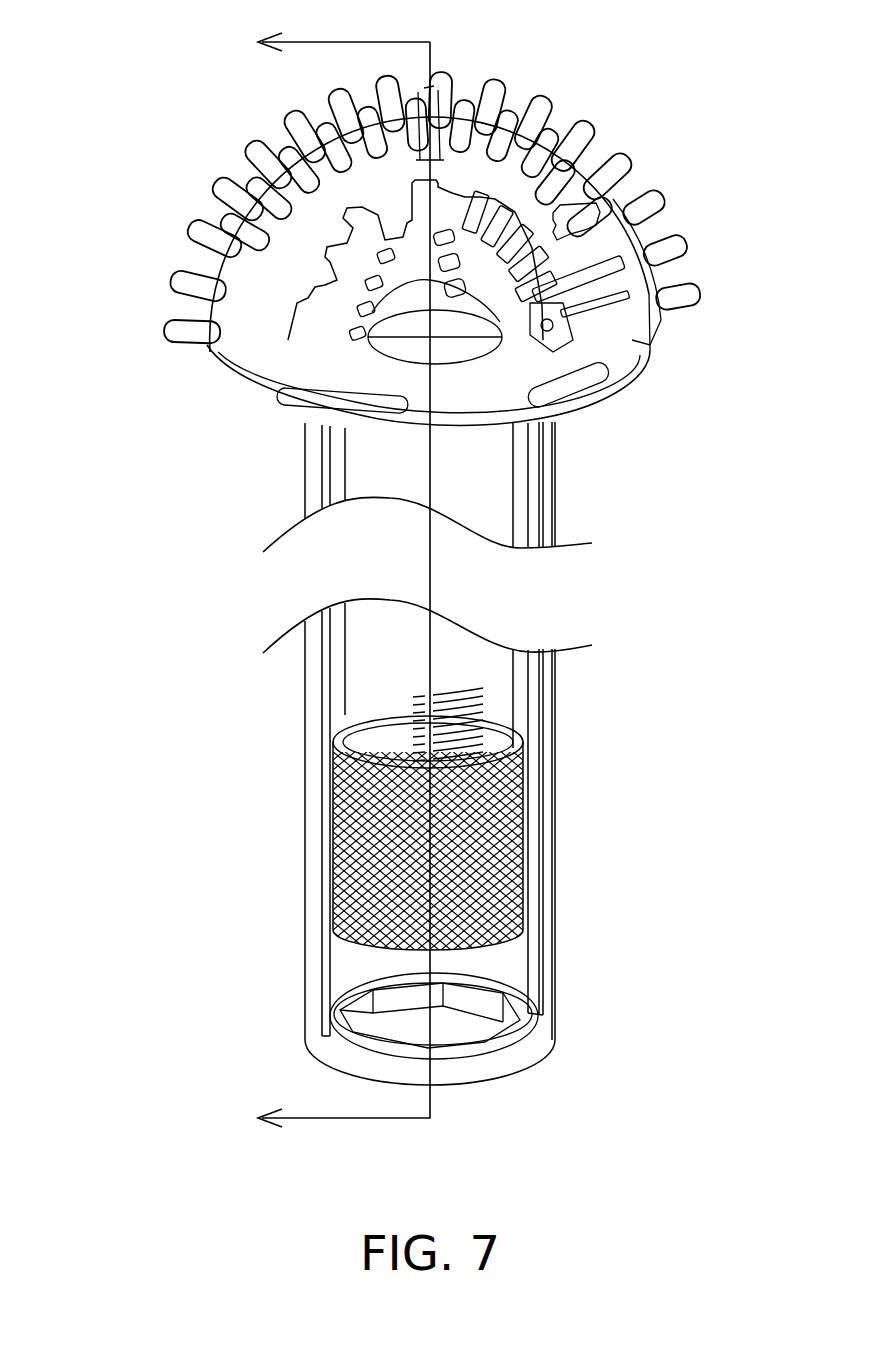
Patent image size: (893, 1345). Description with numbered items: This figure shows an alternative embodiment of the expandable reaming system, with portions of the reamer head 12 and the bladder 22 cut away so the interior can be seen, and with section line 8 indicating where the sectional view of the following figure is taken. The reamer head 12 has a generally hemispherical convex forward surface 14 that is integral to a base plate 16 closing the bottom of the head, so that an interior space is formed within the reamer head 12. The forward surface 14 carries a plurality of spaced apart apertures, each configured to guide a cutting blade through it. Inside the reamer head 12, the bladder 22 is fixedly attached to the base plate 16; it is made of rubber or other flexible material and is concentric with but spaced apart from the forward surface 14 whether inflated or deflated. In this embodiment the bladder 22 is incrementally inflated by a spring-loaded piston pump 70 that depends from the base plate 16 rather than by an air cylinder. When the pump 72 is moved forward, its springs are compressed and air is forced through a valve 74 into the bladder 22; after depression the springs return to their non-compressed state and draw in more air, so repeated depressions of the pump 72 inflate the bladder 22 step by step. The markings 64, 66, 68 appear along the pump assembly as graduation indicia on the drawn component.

The section line 8- 8 is at (367, 580).
The reamer head 12 is at (636, 92).
The forward surface 14 is at (207, 312).
The base plate 16 is at (215, 375).
The bladder 22 is at (332, 338).
The graduation mark 64 is at (460, 748).
The graduation mark 66 is at (460, 722).
The graduation mark 68 is at (460, 697).
The spring-loaded piston pump 70 is at (347, 675).
The pump 72 is at (520, 932).
The valve 74 is at (452, 348).